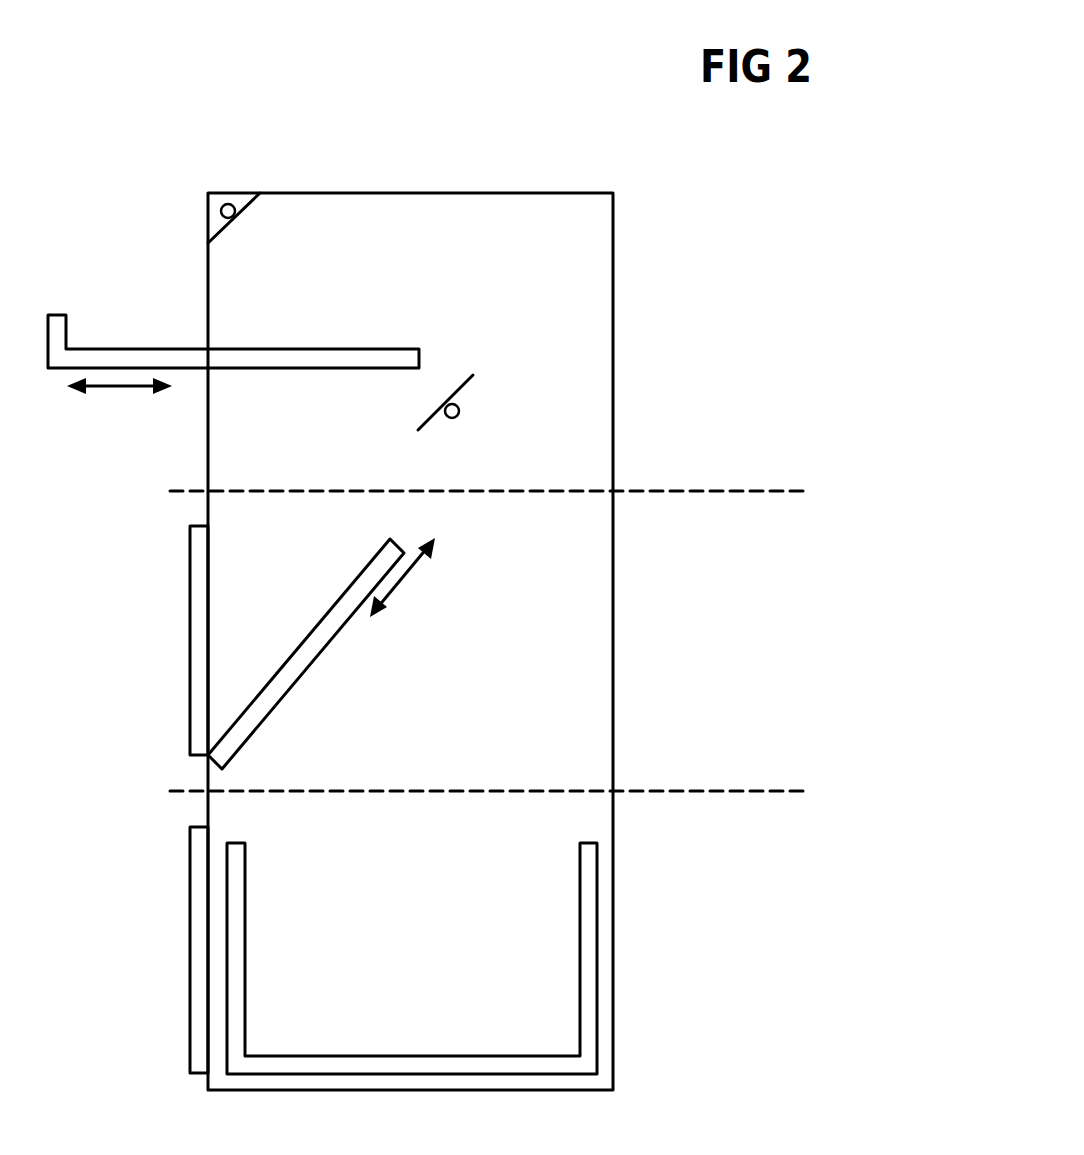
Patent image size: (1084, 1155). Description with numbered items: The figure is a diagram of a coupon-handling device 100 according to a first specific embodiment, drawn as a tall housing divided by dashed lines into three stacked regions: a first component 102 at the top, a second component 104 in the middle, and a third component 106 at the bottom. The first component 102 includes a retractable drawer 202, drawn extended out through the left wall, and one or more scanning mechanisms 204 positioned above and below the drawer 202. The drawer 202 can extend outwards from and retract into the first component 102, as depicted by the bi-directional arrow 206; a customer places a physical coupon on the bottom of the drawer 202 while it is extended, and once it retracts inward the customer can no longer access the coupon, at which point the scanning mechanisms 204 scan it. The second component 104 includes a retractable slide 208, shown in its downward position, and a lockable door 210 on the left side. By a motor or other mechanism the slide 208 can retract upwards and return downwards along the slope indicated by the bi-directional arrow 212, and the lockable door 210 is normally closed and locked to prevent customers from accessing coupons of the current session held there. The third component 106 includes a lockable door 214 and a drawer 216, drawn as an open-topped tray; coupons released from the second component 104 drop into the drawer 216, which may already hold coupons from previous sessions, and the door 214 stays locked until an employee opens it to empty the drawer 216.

The device 100 is at (410, 625).
The first component 102 is at (490, 395).
The second component 104 is at (490, 695).
The third component 106 is at (714, 940).
The retractable drawer 202 is at (122, 349).
The scanning mechanism 204 is at (235, 214).
The bi-directional arrow 206 is at (125, 386).
The retractable slide 208 is at (300, 641).
The lockable door 210 is at (190, 602).
The bi-directional arrow 212 is at (408, 575).
The lockable door 214 is at (190, 942).
The drawer 216 is at (312, 1056).